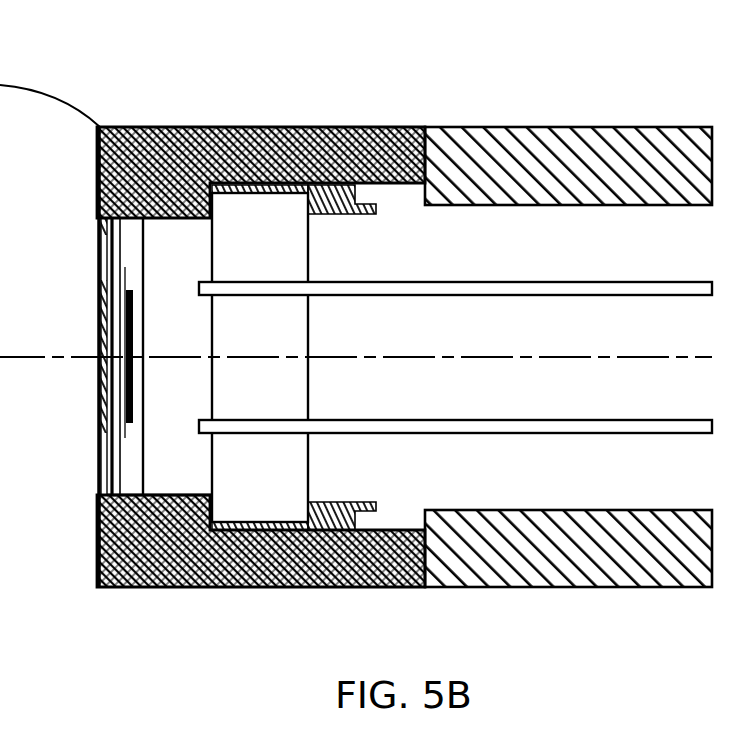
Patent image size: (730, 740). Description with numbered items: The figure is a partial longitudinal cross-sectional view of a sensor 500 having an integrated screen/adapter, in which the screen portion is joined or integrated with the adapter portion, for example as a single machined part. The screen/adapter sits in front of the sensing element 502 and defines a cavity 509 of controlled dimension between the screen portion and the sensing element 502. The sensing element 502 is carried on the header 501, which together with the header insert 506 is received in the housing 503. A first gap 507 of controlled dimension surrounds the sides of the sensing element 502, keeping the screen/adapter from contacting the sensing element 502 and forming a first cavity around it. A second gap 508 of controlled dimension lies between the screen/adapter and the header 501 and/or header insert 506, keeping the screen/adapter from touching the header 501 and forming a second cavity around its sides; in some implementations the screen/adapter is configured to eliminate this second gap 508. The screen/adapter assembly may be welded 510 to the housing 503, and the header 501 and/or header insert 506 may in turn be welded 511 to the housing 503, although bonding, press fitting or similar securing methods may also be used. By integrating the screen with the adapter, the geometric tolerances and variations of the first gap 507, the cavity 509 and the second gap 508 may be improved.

The sensor 500 is at (475, 47).
The header 501 is at (272, 411).
The sensing element 502 is at (126, 272).
The housing 503 is at (460, 568).
The header insert 506 is at (338, 212).
The first gap 507 is at (150, 486).
The second gap 508 is at (267, 194).
The cavity 509 is at (112, 452).
The weld 510 is at (428, 125).
The weld 511 is at (358, 498).